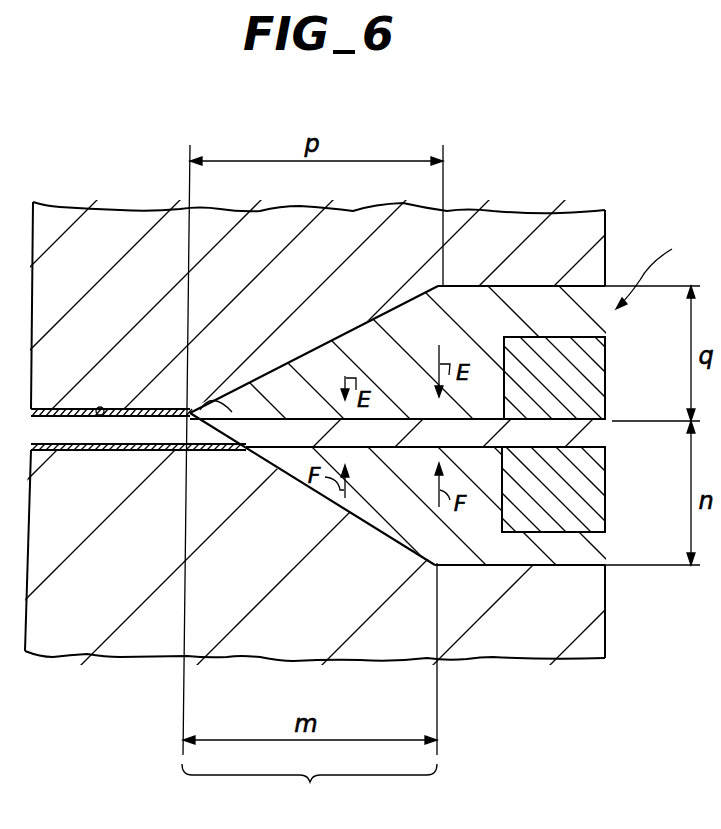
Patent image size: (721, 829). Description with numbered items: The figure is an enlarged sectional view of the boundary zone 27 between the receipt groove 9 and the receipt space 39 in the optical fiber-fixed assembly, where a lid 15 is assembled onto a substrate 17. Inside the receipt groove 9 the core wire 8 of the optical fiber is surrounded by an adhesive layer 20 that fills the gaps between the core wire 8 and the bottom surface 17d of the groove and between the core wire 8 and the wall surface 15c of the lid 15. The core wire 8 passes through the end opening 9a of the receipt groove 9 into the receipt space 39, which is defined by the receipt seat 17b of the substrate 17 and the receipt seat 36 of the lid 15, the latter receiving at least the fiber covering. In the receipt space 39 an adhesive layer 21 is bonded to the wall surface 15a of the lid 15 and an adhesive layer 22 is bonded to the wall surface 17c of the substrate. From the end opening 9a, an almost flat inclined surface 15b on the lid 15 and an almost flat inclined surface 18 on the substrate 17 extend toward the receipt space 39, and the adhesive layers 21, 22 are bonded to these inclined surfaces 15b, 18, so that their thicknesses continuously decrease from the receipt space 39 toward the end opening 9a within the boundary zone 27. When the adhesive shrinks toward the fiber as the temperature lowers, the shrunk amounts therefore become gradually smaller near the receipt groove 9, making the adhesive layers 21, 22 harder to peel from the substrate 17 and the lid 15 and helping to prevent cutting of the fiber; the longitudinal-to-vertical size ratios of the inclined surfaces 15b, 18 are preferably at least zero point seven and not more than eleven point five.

The core wire 8 is at (157, 440).
The receipt groove 9 is at (76, 405).
The end opening of the receipt groove 9a is at (226, 398).
The lid 15 is at (500, 232).
The wall surface of the lid 15a is at (533, 292).
The inclined surface of the lid 15b is at (305, 349).
The wall surface of the lid 15c is at (101, 404).
The substrate 17 is at (617, 632).
The receipt seat of the substrate 17b is at (527, 577).
The wall surface of the receipt space 17c is at (570, 565).
The bottom surface of the receipt groove 17d is at (100, 450).
The inclined surface 18 is at (387, 529).
The adhesive layer 20 is at (149, 405).
The adhesive layer 21 is at (373, 338).
The adhesive layer 22 is at (356, 514).
The boundary zone 27 is at (309, 789).
The receipt seat of the lid 36 is at (470, 288).
The receipt space 39 is at (659, 266).